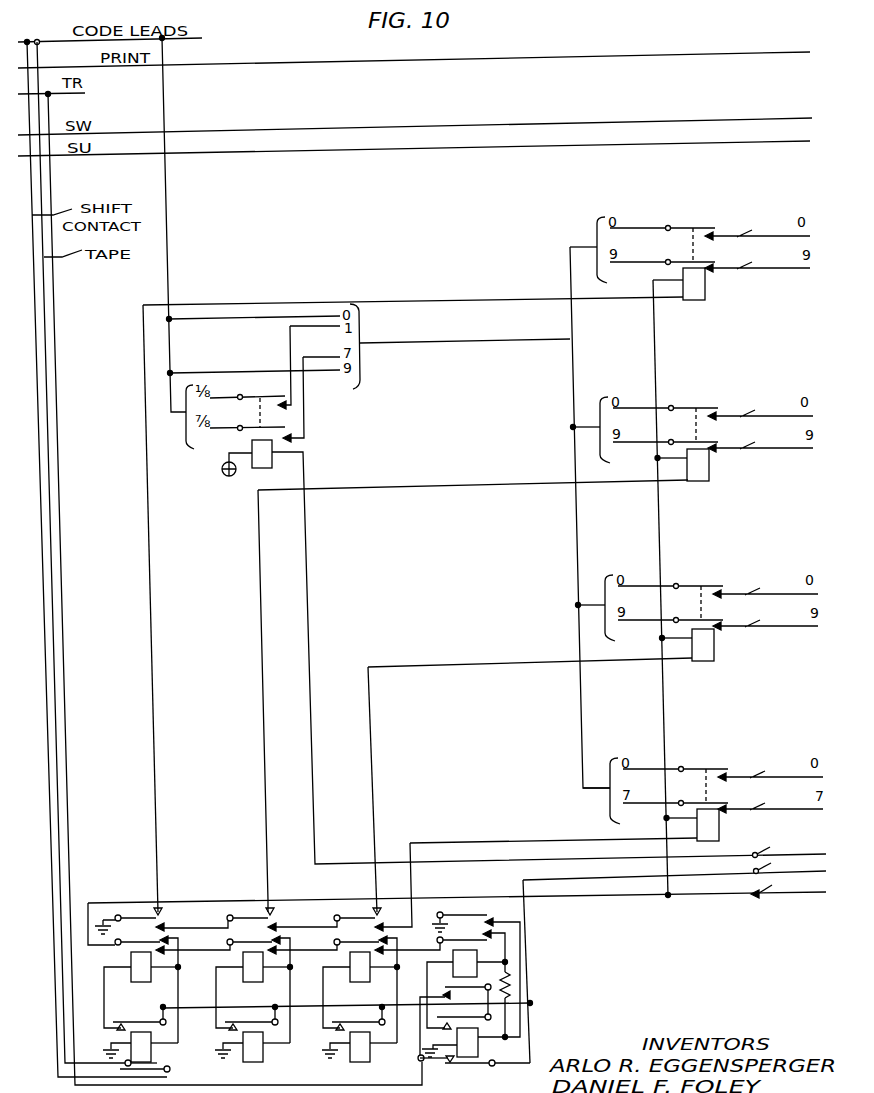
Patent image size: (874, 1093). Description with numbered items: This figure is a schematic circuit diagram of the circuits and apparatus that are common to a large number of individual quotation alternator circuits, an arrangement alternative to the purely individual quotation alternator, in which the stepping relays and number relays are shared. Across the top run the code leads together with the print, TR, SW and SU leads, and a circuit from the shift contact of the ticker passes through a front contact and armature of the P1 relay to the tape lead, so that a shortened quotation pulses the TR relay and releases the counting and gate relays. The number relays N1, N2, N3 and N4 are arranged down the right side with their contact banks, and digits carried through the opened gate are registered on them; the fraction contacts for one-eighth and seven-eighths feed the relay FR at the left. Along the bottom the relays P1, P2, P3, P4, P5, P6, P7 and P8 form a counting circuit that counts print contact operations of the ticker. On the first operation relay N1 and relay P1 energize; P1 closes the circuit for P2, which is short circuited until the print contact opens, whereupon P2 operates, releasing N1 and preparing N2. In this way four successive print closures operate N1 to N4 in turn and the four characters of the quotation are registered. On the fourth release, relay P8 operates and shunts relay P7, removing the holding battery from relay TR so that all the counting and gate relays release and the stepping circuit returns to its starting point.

The N-1 relay N1 is at (679, 284).
The N-2 relay N2 is at (684, 465).
The N-3 relay N3 is at (688, 645).
The N-4 relay N4 is at (693, 825).
The fraction relay FR is at (262, 454).
The P-1 relay P1 is at (141, 1047).
The P-2 relay P2 is at (141, 967).
The P-3 relay P3 is at (253, 1047).
The P-4 relay P4 is at (253, 967).
The P-5 relay P5 is at (360, 1047).
The P-6 relay P6 is at (360, 967).
The P-7 relay P7 is at (467, 1042).
The P-8 relay P8 is at (465, 963).